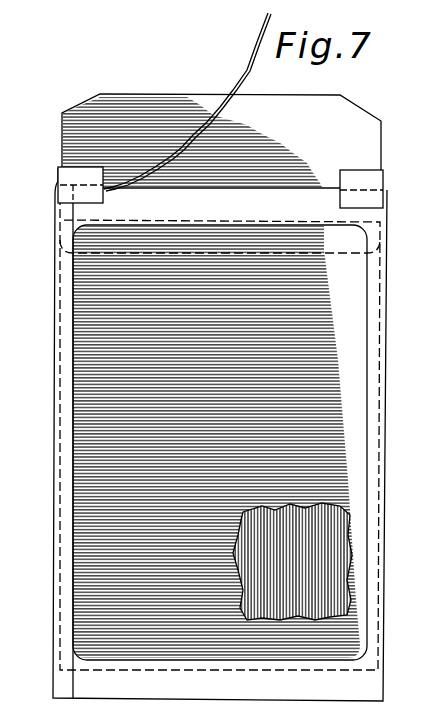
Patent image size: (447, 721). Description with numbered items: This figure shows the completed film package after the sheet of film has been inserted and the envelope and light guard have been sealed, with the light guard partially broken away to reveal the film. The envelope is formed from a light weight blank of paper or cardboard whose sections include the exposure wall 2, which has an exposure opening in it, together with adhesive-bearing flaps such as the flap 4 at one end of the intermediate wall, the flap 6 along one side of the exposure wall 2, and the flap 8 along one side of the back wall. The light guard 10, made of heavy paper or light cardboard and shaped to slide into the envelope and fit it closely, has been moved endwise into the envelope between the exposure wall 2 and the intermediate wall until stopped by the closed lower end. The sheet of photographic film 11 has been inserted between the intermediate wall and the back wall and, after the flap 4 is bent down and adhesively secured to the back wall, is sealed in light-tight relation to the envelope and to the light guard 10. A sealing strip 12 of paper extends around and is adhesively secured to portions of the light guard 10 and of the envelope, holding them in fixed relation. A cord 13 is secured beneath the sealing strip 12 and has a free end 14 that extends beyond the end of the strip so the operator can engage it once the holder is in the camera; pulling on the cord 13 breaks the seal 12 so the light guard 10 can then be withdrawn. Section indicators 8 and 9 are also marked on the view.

The exposure wall 2 is at (314, 208).
The flap 4 is at (343, 255).
The flap 6 is at (66, 550).
The flap 8 is at (40, 172).
The section line 9- 9 is at (40, 396).
The light guard 10 is at (322, 103).
The sheet of photographic film 11 is at (333, 552).
The sealing strip 12 is at (64, 178).
The cord 13 is at (340, 189).
The free end 14 is at (256, 62).